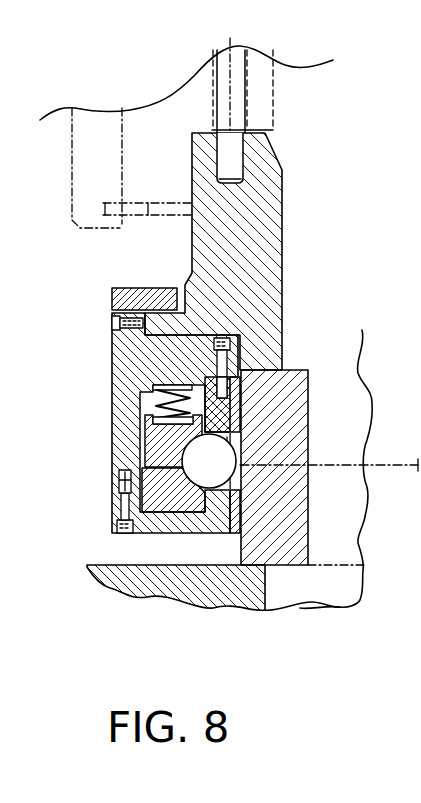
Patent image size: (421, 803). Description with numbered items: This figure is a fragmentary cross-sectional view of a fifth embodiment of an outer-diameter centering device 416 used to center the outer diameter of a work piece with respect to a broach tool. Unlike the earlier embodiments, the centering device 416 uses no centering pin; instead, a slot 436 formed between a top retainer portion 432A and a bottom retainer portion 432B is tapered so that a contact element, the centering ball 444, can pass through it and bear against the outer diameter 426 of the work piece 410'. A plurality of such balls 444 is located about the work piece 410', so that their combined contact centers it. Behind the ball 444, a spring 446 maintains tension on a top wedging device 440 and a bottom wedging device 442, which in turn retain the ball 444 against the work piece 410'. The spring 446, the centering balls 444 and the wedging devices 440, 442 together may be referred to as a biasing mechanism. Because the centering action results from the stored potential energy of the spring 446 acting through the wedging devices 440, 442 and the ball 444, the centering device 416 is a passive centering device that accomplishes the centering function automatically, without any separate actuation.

The work piece 410' is at (302, 467).
The OD centering device 416 is at (142, 538).
The outer diameter 426 is at (385, 467).
The top retainer portion 432A is at (230, 411).
The bottom retainer portion 432B is at (232, 522).
The slot 436 is at (231, 450).
The top wedging device 440 is at (160, 443).
The bottom wedging device 442 is at (130, 486).
The centering ball 444 is at (205, 470).
The spring 446 is at (157, 392).